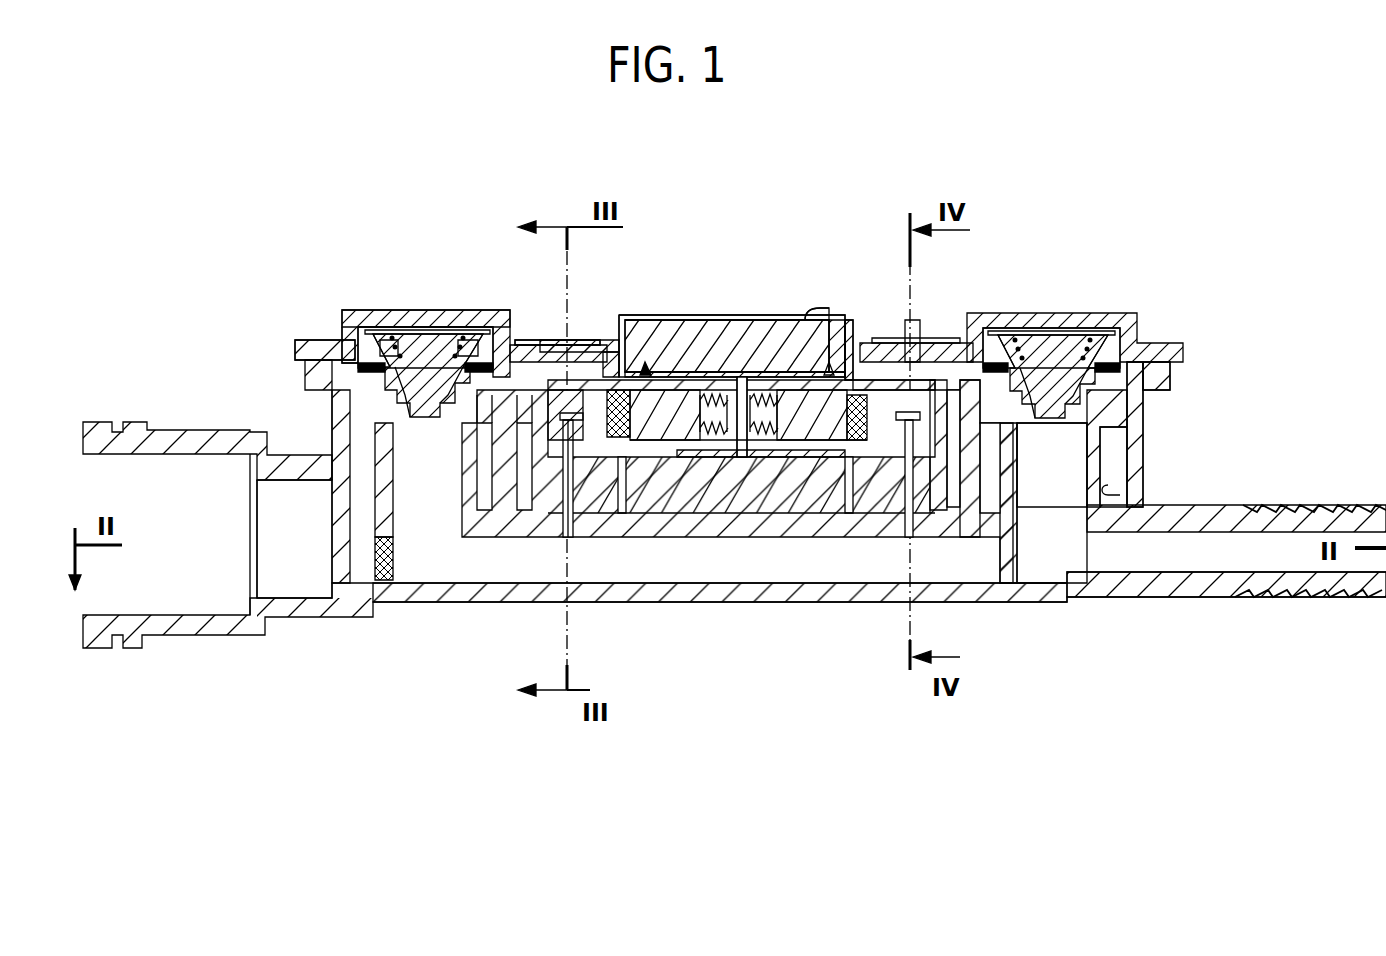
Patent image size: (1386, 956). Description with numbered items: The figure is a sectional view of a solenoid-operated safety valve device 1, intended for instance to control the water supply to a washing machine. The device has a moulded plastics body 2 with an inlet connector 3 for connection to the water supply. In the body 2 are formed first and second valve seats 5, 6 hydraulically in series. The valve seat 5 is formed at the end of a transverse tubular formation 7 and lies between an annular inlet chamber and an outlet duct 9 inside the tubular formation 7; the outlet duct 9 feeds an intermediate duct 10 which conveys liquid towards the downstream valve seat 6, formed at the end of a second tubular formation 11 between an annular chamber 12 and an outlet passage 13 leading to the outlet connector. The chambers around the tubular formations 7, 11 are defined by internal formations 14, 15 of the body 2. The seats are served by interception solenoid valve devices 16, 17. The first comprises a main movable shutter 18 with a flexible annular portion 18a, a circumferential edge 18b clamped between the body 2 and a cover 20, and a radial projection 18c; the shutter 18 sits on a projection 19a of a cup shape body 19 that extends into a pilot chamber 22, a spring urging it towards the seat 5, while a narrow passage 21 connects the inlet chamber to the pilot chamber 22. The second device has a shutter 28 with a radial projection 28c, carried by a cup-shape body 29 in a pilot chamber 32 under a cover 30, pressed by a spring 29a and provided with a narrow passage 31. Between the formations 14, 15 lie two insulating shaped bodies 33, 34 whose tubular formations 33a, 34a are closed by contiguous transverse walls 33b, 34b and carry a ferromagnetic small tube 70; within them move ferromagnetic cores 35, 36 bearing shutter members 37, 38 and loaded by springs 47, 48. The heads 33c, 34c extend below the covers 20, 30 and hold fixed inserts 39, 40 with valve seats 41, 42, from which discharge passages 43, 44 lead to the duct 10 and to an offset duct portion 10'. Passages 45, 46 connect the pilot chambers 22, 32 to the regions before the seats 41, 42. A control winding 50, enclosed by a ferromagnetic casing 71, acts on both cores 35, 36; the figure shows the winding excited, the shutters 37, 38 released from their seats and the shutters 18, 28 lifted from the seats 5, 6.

The solenoid-operated safety valve device 1 is at (357, 172).
The body 2 is at (1148, 430).
The inlet connector 3 is at (145, 448).
The first valve seat 5 is at (335, 402).
The second valve seat 6 is at (1110, 415).
The tubular formation 7 is at (350, 482).
The outlet duct 9 is at (480, 500).
The intermediate duct 10 is at (720, 622).
The duct portion 10' is at (1226, 612).
The tubular formation 11 is at (1115, 460).
The annular chamber 12 is at (1125, 492).
The outlet passage or duct 13 is at (1015, 500).
The internal formation 14 is at (330, 395).
The internal formation 15 is at (1165, 395).
The interception solenoid valve device 16 is at (627, 298).
The interception solenoid valve device 17 is at (808, 308).
The main movable shutter 18 is at (405, 418).
The flexible intermediate annular portion 18a is at (355, 325).
The circumferential edge 18b is at (345, 345).
The radial projection 18c is at (560, 343).
The cup shape body 19 is at (412, 335).
The projection 19a is at (440, 345).
The cover 20 is at (465, 340).
The narrow passage 21 is at (450, 378).
The pilot chamber 22 is at (480, 345).
The shutter 28 is at (1045, 420).
The radial projection 28c is at (950, 345).
The cup-shape body 29 is at (1062, 338).
The spring 29a is at (1100, 355).
The cover 30 is at (1020, 328).
The narrow passage 31 is at (998, 372).
The pilot chamber 32 is at (1070, 345).
The shaped body 33 is at (648, 368).
The tubular formation 33a is at (700, 330).
The transverse wall 33b is at (722, 372).
The head 33c is at (560, 435).
The shaped body 34 is at (828, 352).
The tubular formation 34a is at (818, 308).
The transverse wall 34b is at (748, 385).
The head 34c is at (938, 455).
The movable ferromagnetic core 35 is at (660, 445).
The movable ferromagnetic core 36 is at (812, 445).
The shutter member 37 is at (618, 440).
The shutter member 38 is at (858, 445).
The fixed insert 39 is at (578, 340).
The fixed insert 40 is at (918, 345).
The valve seat 41 is at (608, 360).
The valve seat 42 is at (848, 365).
The discharge passage 43 is at (565, 470).
The discharge passage 44 is at (912, 545).
The passage 45 is at (562, 340).
The passage 46 is at (900, 345).
The spring 47 is at (712, 445).
The spring 48 is at (765, 445).
The control winding 50 is at (735, 340).
The small tube 70 is at (735, 460).
The ferromagnetic envelope/casing 71 is at (808, 345).